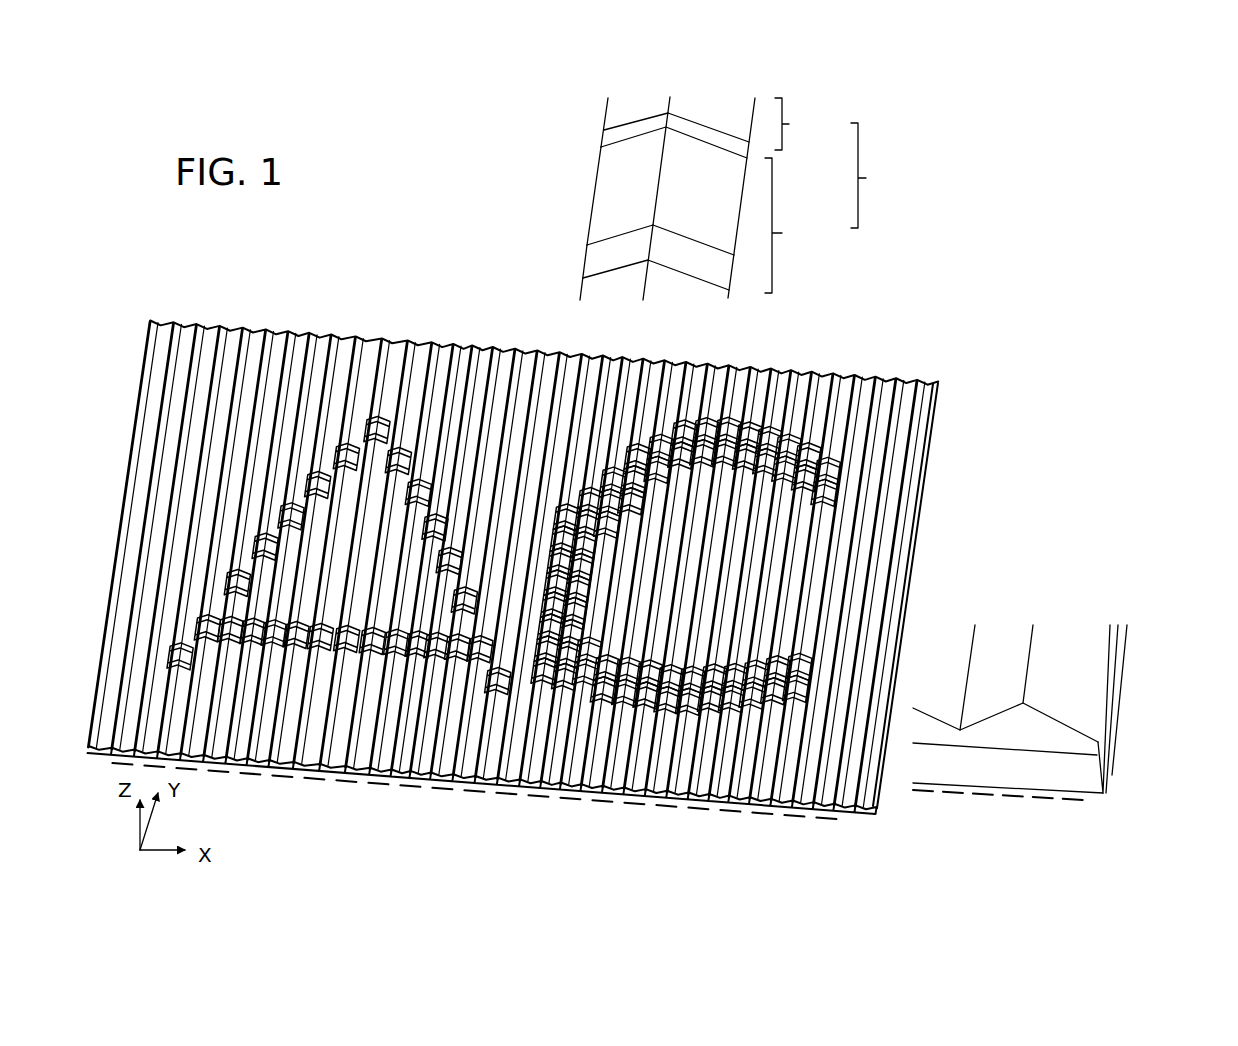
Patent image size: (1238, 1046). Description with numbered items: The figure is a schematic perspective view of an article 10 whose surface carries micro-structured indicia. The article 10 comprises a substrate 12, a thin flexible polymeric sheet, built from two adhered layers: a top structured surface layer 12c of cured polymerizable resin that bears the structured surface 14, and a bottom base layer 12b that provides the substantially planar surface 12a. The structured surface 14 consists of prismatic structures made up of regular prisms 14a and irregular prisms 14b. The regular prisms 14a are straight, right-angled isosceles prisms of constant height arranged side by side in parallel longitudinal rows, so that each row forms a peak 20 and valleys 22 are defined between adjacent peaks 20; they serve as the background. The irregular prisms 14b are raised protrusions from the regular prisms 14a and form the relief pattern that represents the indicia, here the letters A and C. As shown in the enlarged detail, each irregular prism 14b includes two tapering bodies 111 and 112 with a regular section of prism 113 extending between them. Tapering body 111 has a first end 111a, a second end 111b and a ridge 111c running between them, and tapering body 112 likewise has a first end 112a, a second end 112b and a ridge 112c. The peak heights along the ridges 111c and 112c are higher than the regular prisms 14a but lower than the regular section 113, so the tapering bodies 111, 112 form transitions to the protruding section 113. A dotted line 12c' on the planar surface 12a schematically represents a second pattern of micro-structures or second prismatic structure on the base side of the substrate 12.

The article 10 is at (880, 353).
The substrate 12 is at (1055, 726).
The planar surface 12a is at (1047, 795).
The base layer 12b is at (1047, 748).
The structured surface layer 12c is at (1054, 698).
The dotted line 12c' is at (762, 819).
The structured surface 14 is at (830, 195).
The regular prisms 14a is at (806, 124).
The irregular prisms 14b is at (796, 225).
The peak 20 is at (923, 420).
The valley 22 is at (893, 410).
The tapering body 111 is at (610, 252).
The first end 111a is at (610, 233).
The second end 111b is at (612, 273).
The ridge 111c is at (655, 243).
The tapering body 112 is at (629, 184).
The first end 112a is at (637, 118).
The second end 112b is at (637, 135).
The ridge 112c is at (670, 118).
The regular section of prism 113 is at (600, 217).